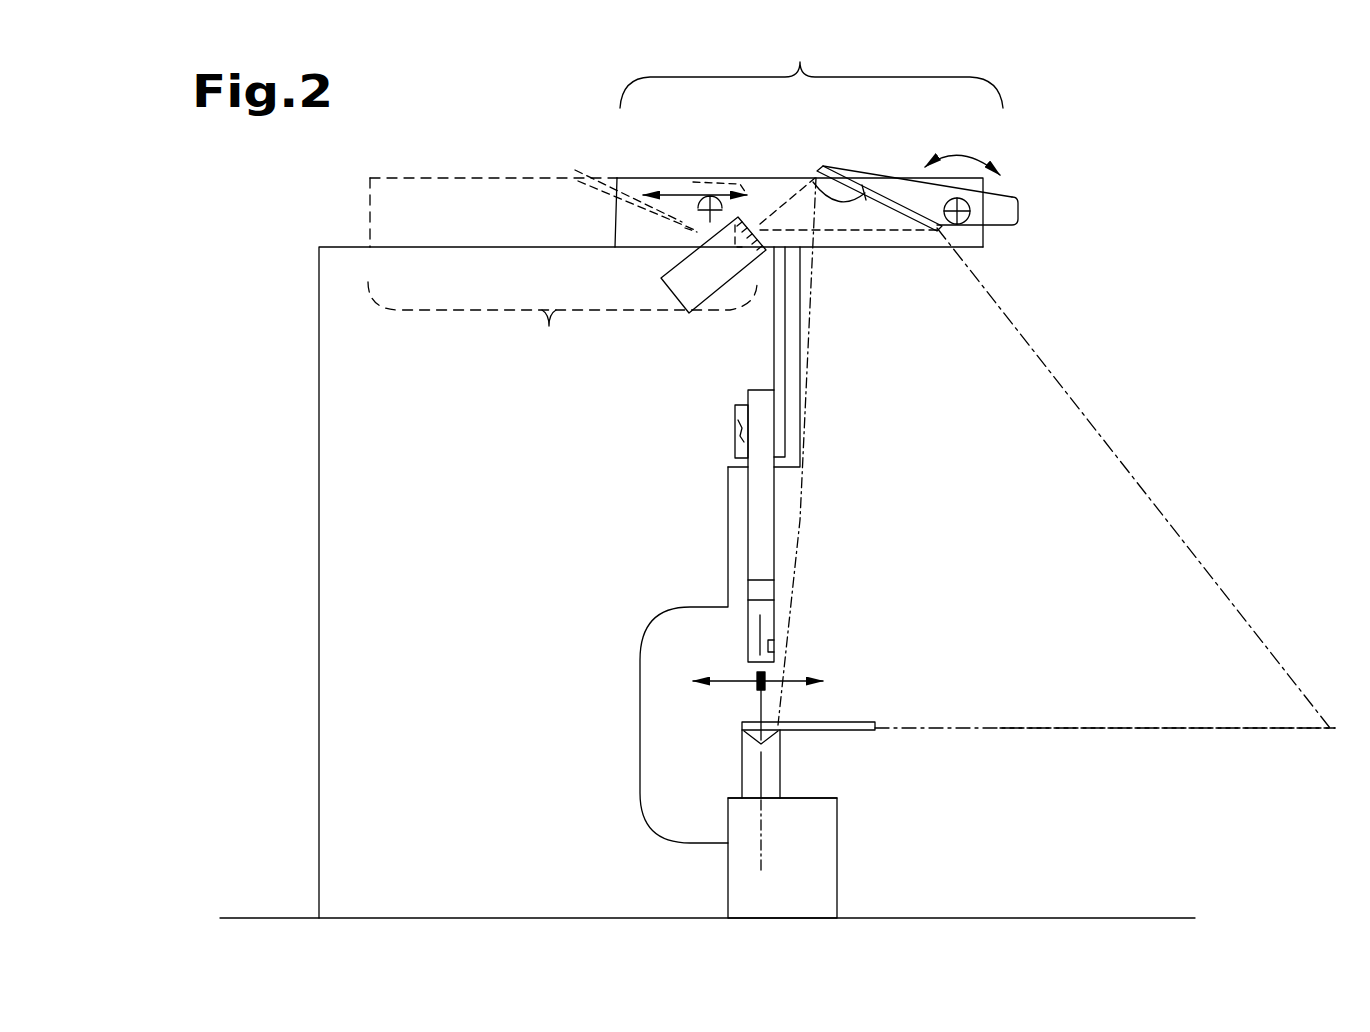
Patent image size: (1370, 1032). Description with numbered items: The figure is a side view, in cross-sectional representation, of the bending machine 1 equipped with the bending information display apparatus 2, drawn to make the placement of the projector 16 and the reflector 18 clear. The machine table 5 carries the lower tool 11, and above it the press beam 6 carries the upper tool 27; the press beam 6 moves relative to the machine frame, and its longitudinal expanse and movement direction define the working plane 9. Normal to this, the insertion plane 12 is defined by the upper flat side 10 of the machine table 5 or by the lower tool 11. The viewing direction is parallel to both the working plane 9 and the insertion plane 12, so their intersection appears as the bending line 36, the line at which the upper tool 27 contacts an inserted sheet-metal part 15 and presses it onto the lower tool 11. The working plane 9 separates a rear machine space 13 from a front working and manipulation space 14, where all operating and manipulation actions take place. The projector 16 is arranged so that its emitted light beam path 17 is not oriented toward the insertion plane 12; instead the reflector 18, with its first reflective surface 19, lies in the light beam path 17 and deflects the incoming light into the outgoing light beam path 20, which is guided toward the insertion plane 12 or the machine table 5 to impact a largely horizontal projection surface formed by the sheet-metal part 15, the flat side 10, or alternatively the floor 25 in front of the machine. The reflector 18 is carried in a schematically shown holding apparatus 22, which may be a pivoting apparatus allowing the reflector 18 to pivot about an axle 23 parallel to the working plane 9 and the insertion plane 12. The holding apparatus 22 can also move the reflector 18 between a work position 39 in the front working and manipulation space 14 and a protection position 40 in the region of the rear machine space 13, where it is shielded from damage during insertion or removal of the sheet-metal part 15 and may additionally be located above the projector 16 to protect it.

The bending machine 1 is at (272, 280).
The bending information display apparatus 2 is at (605, 160).
The machine table 5 is at (808, 849).
The press beam 6 is at (757, 508).
The working plane 9 is at (758, 783).
The upper flat side 10 is at (818, 797).
The lower tool 11 is at (752, 753).
The insertion plane 12 is at (1025, 731).
The rear machine space 13 is at (734, 690).
The front working and manipulation space 14 is at (795, 681).
The sheet-metal part 15 is at (863, 722).
The projector 16 is at (720, 232).
The light beam path 17 is at (780, 187).
The reflector 18 is at (893, 194).
The first reflective surface 19 is at (810, 177).
The outgoing light beam path 20 is at (1150, 470).
The holding apparatus 22 is at (632, 218).
The axle 23 is at (984, 204).
The floor 25 is at (1142, 914).
The upper tool 27 is at (752, 648).
The bending line 36 is at (776, 727).
The work position 39 is at (811, 64).
The protection position 40 is at (562, 325).